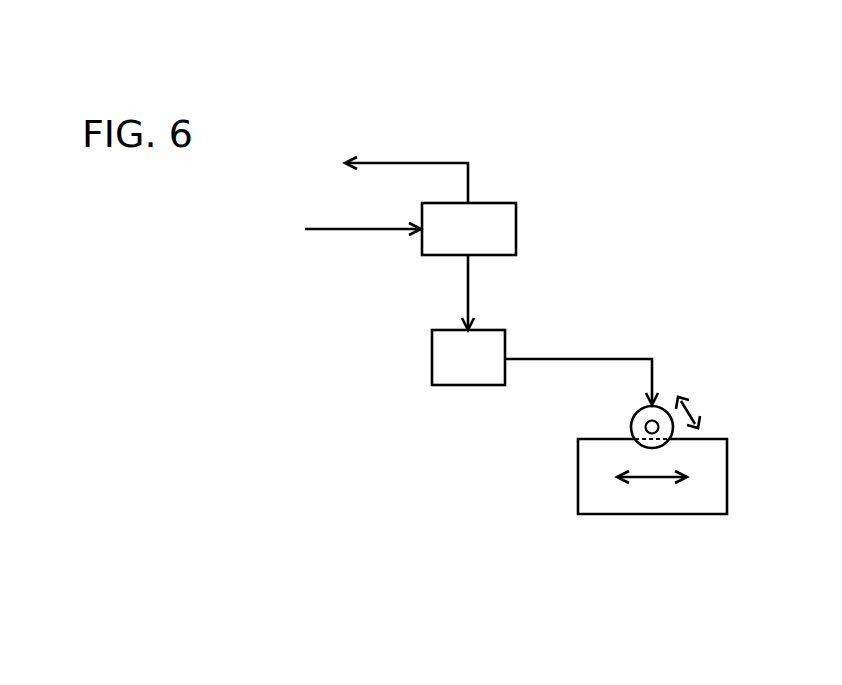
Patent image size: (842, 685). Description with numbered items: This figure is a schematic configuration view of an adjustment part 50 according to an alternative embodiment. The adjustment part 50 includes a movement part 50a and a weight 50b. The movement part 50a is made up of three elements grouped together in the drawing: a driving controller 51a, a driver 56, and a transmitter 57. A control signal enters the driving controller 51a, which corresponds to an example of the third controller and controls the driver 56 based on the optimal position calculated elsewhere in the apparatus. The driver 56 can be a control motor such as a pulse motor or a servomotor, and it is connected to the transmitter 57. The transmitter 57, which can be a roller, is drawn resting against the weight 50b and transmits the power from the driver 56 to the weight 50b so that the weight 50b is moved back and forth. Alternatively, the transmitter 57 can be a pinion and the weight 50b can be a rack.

The adjustment part 50 is at (410, 147).
The movement part 50a is at (542, 162).
The driving controller 51a is at (503, 228).
The driver 56 is at (490, 347).
The transmitter 57 is at (660, 417).
The weight 50b is at (653, 500).